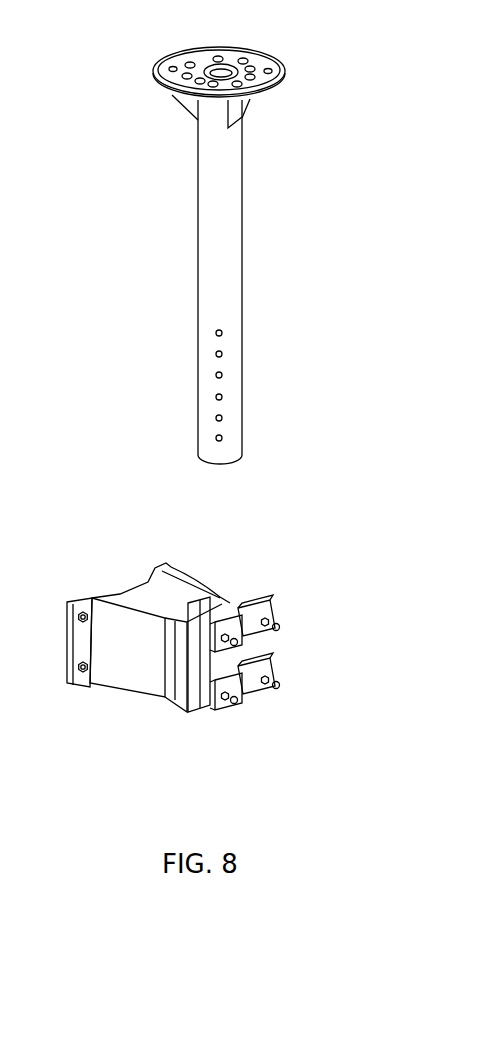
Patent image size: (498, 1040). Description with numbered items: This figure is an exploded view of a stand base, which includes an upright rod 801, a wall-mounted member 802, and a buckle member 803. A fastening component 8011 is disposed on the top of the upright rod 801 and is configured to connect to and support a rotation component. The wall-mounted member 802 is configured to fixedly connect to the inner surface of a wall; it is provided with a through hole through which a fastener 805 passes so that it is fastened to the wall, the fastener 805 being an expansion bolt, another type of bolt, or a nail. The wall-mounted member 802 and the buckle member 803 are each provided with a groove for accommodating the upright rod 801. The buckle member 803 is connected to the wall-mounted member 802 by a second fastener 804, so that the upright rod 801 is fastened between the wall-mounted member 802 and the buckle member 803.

The upright rod 801 is at (228, 257).
The fastening component 8011 is at (250, 52).
The wall-mounted member 802 is at (205, 584).
The buckle member 803 is at (265, 605).
The second fastener 804 is at (246, 703).
The fastener 805 is at (78, 667).